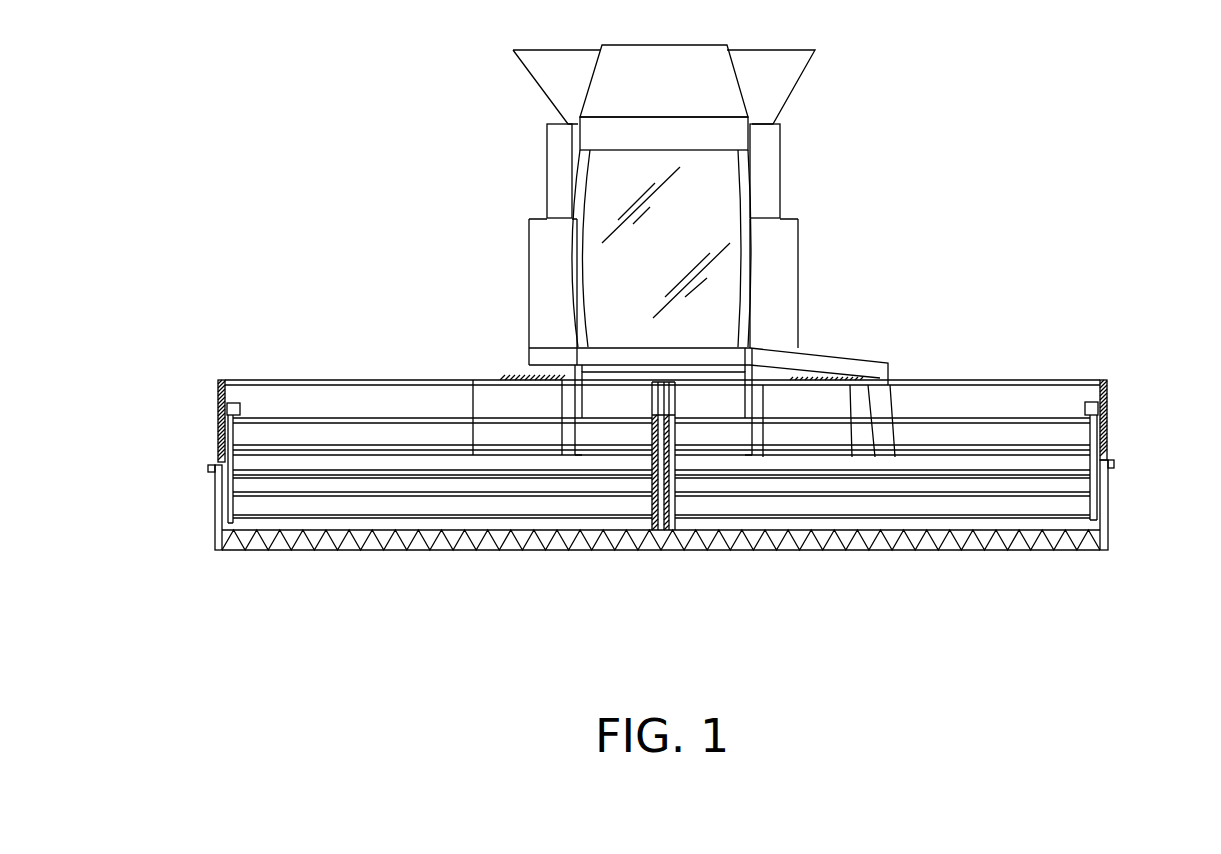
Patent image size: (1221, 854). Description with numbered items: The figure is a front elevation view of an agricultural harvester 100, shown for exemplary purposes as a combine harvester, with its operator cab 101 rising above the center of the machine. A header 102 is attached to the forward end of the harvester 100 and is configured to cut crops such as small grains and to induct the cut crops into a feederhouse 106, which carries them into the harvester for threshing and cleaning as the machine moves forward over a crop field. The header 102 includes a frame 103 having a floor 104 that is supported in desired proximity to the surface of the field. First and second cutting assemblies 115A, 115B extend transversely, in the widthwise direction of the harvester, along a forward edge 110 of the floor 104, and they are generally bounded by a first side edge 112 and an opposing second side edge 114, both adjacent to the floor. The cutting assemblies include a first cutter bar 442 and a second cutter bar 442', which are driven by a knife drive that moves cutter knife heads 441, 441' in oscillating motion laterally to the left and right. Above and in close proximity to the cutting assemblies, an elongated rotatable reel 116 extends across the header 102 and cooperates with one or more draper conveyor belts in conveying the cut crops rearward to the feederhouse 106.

The agricultural harvester 100 is at (498, 192).
The operator cab 101 is at (786, 190).
The header 102 is at (208, 380).
The frame 103 is at (1060, 380).
The floor 104 is at (394, 530).
The feederhouse 106 is at (708, 387).
The forward edge 110 is at (382, 550).
The first side edge 112 is at (213, 525).
The second side edge 114 is at (1108, 525).
The rotatable reel 116 is at (943, 479).
The cutter knife head 441 is at (620, 487).
The cutter knife head 441' is at (708, 487).
The first cutter bar 442 is at (437, 560).
The second cutter bar 442' is at (887, 561).
The first cutting assembly 115A is at (657, 588).
The second cutting assembly 115B is at (1113, 588).